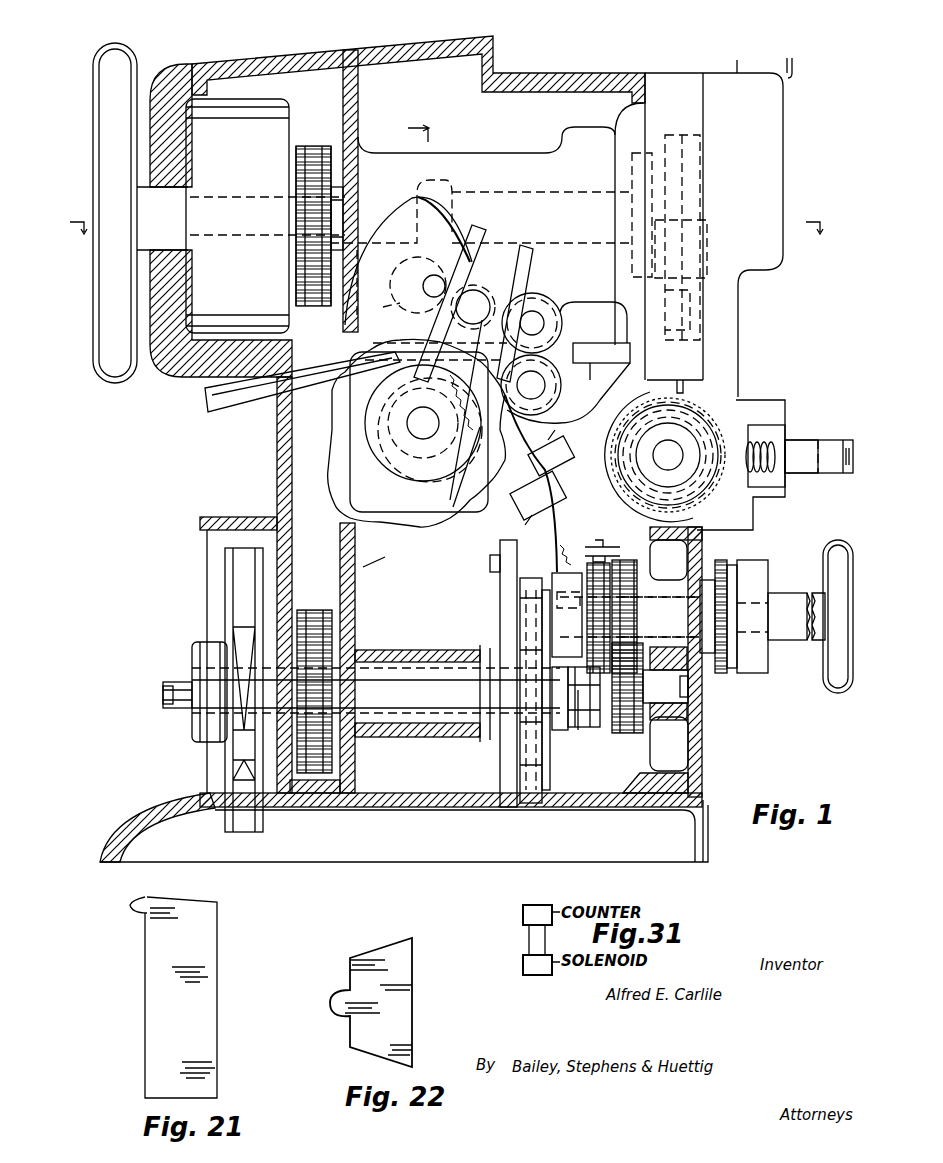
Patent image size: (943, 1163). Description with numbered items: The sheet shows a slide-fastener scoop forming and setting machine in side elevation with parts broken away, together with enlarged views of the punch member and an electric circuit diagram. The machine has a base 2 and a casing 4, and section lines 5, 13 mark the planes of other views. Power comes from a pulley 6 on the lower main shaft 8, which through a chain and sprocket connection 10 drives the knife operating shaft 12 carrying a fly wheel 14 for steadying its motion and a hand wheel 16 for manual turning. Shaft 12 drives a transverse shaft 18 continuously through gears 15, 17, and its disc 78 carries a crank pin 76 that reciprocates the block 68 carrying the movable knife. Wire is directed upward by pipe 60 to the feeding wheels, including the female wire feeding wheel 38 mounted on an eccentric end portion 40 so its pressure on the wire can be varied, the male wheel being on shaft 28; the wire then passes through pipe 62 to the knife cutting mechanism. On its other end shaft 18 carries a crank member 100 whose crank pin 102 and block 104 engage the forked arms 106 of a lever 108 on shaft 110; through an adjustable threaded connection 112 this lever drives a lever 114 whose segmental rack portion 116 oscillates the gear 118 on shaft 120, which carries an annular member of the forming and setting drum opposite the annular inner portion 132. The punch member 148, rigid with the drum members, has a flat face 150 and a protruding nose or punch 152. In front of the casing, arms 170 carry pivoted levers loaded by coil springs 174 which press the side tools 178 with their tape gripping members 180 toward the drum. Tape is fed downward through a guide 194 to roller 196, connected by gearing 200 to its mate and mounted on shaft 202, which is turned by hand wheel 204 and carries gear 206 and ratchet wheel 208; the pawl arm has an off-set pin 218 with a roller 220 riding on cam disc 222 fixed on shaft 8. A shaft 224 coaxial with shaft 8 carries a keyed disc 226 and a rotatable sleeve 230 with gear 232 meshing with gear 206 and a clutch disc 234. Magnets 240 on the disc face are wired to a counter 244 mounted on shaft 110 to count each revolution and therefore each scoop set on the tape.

In FIG. 1, the base 2 is at (343, 845).
In FIG. 1, the casing 4 is at (444, 394).
In FIG. 1, the section line 5- 5 is at (424, 295).
In FIG. 1, the pulley 6 is at (232, 597).
In FIG. 1, the lower main shaft 8 is at (275, 706).
In FIG. 1, the chain and sprocket connection 10 is at (307, 502).
In FIG. 1, the knife operating shaft 12 is at (338, 213).
In FIG. 1, the section line 13- 13 is at (612, 523).
In FIG. 1, the fly wheel 14 is at (243, 124).
In FIG. 1, the gear 15 is at (452, 188).
In FIG. 1, the hand wheel 16 is at (140, 58).
In FIG. 1, the gear 17 is at (379, 312).
In FIG. 1, the transverse shaft 18 is at (423, 283).
In FIG. 1, the shaft 28 is at (545, 305).
In FIG. 1, the female wire feeding wheel 38 is at (550, 385).
In FIG. 1, the eccentric end portion 40 is at (540, 377).
In FIG. 1, the pipe 60 is at (320, 387).
In FIG. 1, the pipe 62 is at (590, 345).
In FIG. 1, the block 68 is at (685, 192).
In FIG. 1, the crank pin 76 is at (690, 253).
In FIG. 1, the disc 78 is at (633, 167).
In FIG. 1, the crank member 100 is at (386, 222).
In FIG. 1, the crank pin 102 is at (482, 287).
In FIG. 1, the block 104 is at (460, 237).
In FIG. 1, the forked arms 106 is at (533, 256).
In FIG. 1, the lever 108 is at (483, 500).
In FIG. 1, the shaft 110 is at (420, 433).
In FIG. 1, the adjustable threaded connection 112 is at (567, 506).
In FIG. 1, the lever 114 is at (486, 508).
In FIG. 1, the segmental rack portion 116 is at (625, 450).
In FIG. 1, the gear 118 is at (703, 427).
In FIG. 1, the shaft 120 is at (675, 460).
In FIG. 1, the annular inner portion 132 is at (536, 300).
In FIG. 21, the punch member 148 is at (200, 1043).
In FIG. 22, the punch member 148 is at (400, 1006).
In FIG. 22, the flat face 150 is at (350, 973).
In FIG. 21, the protruding nose or punch 152 is at (138, 906).
In FIG. 22, the protruding nose or punch 152 is at (330, 1003).
In FIG. 1, the arms 170 is at (770, 418).
In FIG. 1, the coil springs 174 is at (767, 470).
In FIG. 1, the side tools 178 is at (833, 463).
In FIG. 1, the tape gripping members 180 is at (797, 428).
In FIG. 1, the guide 194 is at (790, 74).
In FIG. 1, the roller 196 is at (758, 667).
In FIG. 1, the gearing 200 is at (723, 673).
In FIG. 1, the shaft 202 is at (778, 610).
In FIG. 1, the hand wheel 204 is at (838, 693).
In FIG. 1, the gear 206 is at (638, 567).
In FIG. 1, the ratchet wheel 208 is at (610, 562).
In FIG. 1, the off-set pin 218 is at (523, 550).
In FIG. 1, the roller 220 is at (497, 577).
In FIG. 1, the cam disc 222 is at (507, 743).
In FIG. 1, the shaft 224 is at (680, 707).
In FIG. 1, the disc 226 is at (537, 803).
In FIG. 1, the sleeve 230 is at (580, 705).
In FIG. 1, the gear 232 is at (628, 735).
In FIG. 1, the disc 234 is at (552, 757).
In FIG. 31, the magnets 240 is at (523, 968).
In FIG. 1, the counter 244 is at (357, 478).
In FIG. 31, the counter 244 is at (523, 918).